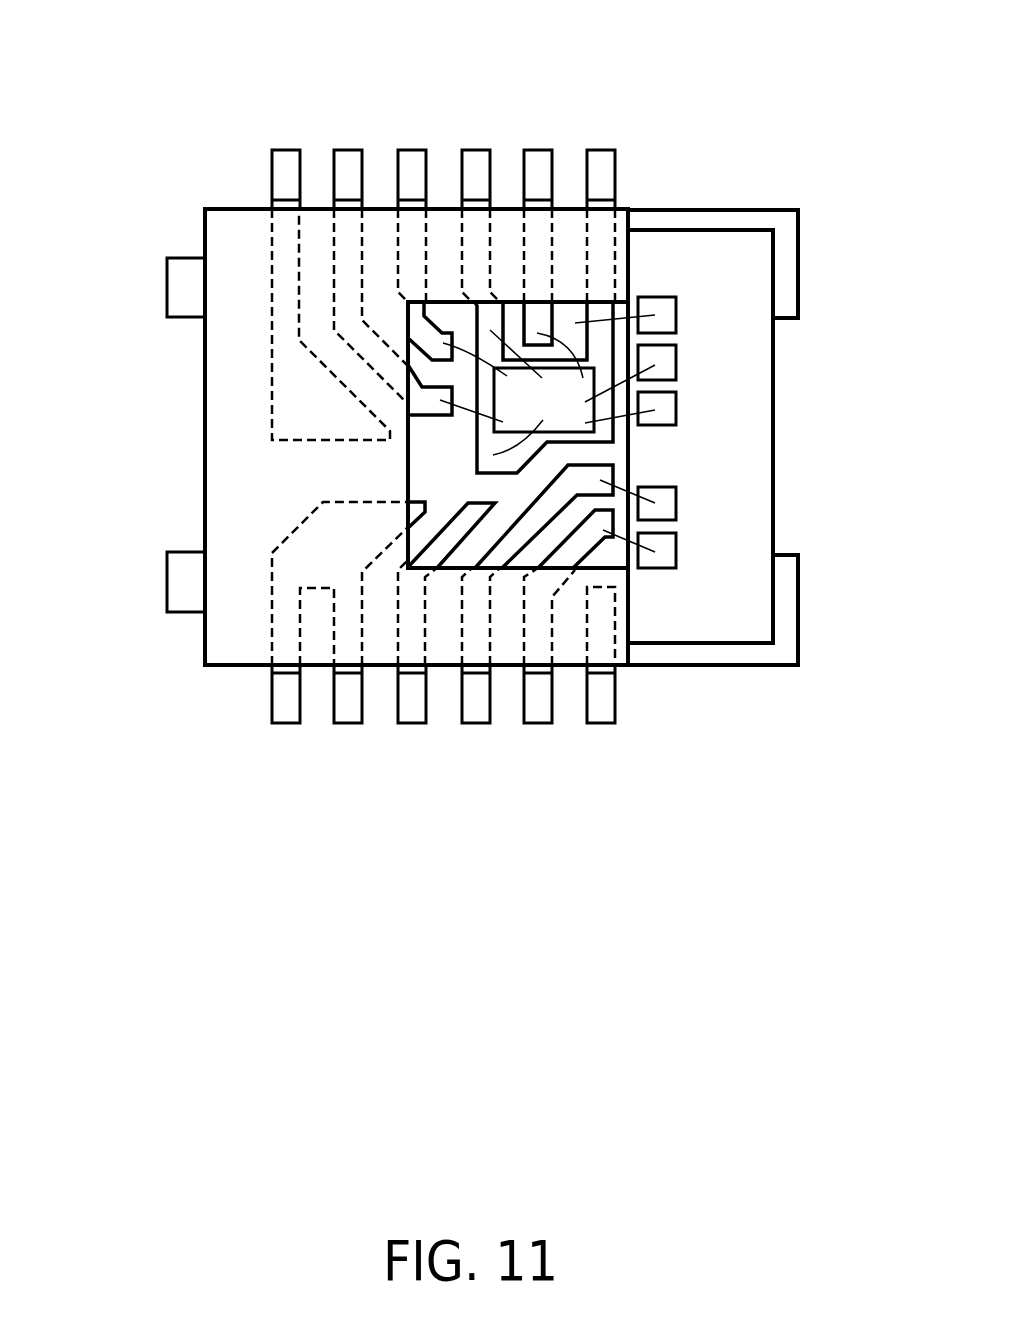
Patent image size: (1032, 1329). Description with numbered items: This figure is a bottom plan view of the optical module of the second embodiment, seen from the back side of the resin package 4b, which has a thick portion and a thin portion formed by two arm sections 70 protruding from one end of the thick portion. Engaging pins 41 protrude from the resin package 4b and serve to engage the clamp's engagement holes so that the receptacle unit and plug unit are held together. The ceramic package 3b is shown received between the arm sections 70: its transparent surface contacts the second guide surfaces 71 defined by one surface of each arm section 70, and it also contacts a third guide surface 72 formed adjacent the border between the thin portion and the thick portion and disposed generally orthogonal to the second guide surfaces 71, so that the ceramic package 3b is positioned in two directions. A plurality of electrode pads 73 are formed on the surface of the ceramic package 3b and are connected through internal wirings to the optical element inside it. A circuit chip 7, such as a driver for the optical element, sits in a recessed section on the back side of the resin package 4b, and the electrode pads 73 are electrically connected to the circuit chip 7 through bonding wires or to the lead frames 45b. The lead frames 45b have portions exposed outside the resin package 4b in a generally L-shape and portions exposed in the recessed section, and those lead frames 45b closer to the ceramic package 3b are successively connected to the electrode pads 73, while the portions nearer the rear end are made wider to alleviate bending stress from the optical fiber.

The ceramic package 3b is at (775, 435).
The resin package 4b is at (205, 457).
The circuit chip 7 is at (532, 407).
The engaging pins 41 is at (166, 278).
The lead frames 45b is at (411, 152).
The arm sections 70 is at (728, 195).
The second guide surface 71 is at (782, 243).
The third guide surface 72 is at (632, 652).
The electrode pads 73 is at (658, 314).